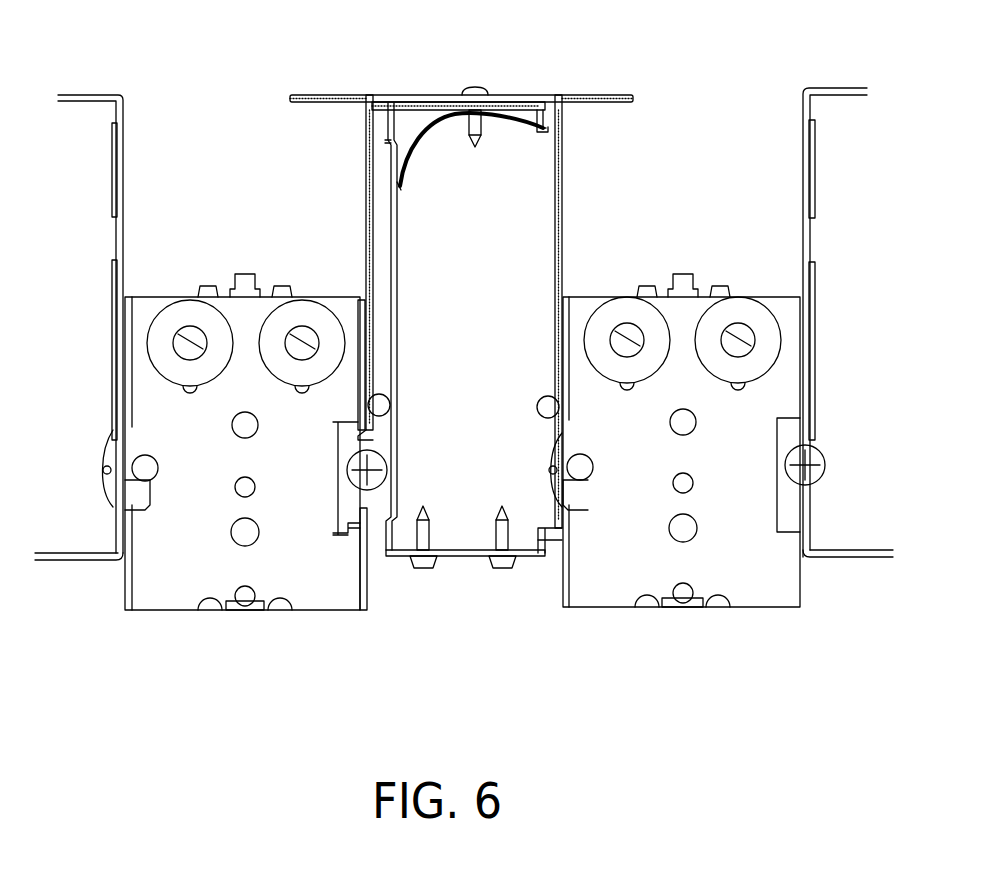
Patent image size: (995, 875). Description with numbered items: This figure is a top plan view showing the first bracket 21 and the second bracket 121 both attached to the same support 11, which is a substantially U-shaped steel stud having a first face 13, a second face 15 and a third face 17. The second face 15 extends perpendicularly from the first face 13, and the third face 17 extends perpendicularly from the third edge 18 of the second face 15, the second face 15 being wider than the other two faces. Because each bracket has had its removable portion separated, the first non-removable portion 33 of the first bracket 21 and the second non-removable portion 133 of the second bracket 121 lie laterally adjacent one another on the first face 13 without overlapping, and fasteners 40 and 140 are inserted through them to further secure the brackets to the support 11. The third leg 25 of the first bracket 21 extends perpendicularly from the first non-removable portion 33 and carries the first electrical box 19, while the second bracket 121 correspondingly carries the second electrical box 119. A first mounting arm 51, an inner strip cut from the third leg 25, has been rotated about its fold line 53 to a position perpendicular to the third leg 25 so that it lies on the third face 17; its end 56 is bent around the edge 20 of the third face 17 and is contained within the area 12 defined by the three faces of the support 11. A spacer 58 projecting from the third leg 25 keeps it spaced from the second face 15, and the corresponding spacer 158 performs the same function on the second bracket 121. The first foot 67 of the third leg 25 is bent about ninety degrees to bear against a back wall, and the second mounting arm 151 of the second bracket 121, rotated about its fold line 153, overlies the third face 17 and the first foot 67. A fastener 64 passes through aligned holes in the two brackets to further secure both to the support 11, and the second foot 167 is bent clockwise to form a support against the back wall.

The support 11 is at (467, 347).
The area 12 is at (530, 283).
The first face 13 is at (462, 558).
The second face 15 is at (394, 323).
The third face 17 is at (530, 145).
The third edge 18 is at (383, 103).
The first electrical box 19 is at (162, 614).
The edge 20 is at (560, 108).
The first bracket 21 is at (364, 215).
The third leg 25 is at (364, 252).
The first non-removable portion 33 is at (393, 565).
The fastener 40 is at (418, 570).
The first mounting arm 51 is at (410, 160).
The fold line 53 is at (367, 95).
The end of the mounting arm 56 is at (398, 192).
The spacer 58 is at (385, 393).
The fastener 64 is at (485, 90).
The first foot 67 is at (300, 95).
The second electrical box 119 is at (620, 612).
The second bracket 121 is at (564, 218).
The second non-removable portion 133 is at (535, 563).
The fastener 140 is at (498, 572).
The second mounting arm 151 is at (386, 140).
The fold line 153 is at (557, 98).
The spacer 158 is at (553, 393).
The second foot 167 is at (615, 95).